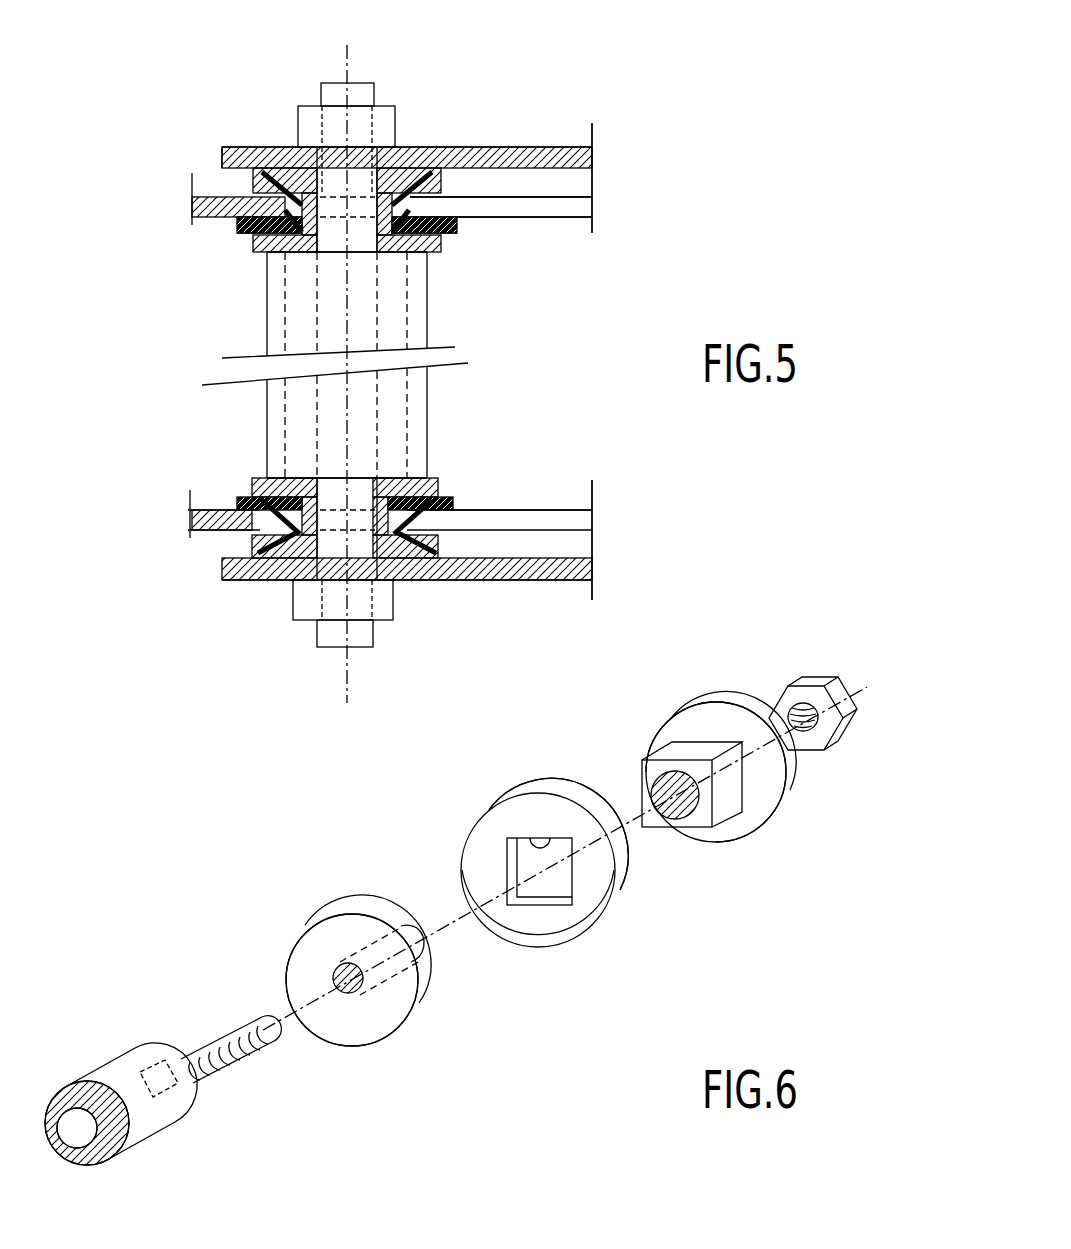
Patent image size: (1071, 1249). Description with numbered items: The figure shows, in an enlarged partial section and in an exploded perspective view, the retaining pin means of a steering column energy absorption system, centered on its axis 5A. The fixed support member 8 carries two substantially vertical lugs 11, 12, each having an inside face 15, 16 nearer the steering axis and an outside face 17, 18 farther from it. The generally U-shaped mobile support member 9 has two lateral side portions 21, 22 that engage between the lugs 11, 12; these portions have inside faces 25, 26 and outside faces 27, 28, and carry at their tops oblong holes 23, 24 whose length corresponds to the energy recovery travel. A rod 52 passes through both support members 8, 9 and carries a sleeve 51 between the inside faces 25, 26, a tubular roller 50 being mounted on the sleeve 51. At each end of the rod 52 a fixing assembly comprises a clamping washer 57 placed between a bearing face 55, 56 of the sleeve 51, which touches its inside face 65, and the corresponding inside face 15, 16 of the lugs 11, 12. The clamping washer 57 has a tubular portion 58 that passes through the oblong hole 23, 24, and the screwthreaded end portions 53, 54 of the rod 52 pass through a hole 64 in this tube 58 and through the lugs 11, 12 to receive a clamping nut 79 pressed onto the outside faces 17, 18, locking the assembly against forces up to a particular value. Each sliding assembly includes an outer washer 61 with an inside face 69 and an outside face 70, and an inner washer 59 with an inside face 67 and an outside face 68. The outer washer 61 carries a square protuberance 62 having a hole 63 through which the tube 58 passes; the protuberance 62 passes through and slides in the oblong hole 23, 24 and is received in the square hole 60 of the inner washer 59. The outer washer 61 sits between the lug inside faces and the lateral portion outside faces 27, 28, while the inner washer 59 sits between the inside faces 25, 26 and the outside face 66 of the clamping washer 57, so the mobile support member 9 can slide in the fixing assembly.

In FIG. 5, the axis 5A is at (347, 62).
In FIG. 6, the axis 5A is at (268, 1022).
In FIG. 5, the fixed support member 8 is at (520, 147).
In FIG. 5, the mobile support member 9 is at (530, 217).
In FIG. 5, the lug 11 is at (232, 150).
In FIG. 5, the lug 12 is at (523, 578).
In FIG. 5, the inside face 15 is at (565, 173).
In FIG. 5, the inside face 16 is at (565, 560).
In FIG. 5, the outside face 17 is at (557, 148).
In FIG. 5, the outside face 18 is at (575, 580).
In FIG. 5, the lateral side portion 21 is at (205, 200).
In FIG. 5, the lateral side portion 22 is at (200, 520).
In FIG. 5, the oblong hole 23 is at (572, 212).
In FIG. 5, the oblong hole 24 is at (517, 520).
In FIG. 5, the inside face 25 is at (505, 218).
In FIG. 5, the inside face 26 is at (578, 505).
In FIG. 5, the outside face 27 is at (565, 195).
In FIG. 5, the outside face 28 is at (565, 528).
In FIG. 5, the tubular roller 50 is at (275, 330).
In FIG. 5, the sleeve 51 is at (405, 397).
In FIG. 6, the sleeve 51 is at (165, 1115).
In FIG. 5, the rod 52 is at (318, 420).
In FIG. 6, the rod 52 is at (85, 1145).
In FIG. 5, the screwthreaded end portion 53 is at (352, 82).
In FIG. 6, the screwthreaded end portion 53 is at (235, 1030).
In FIG. 5, the screwthreaded end portion 54 is at (365, 646).
In FIG. 5, the bearing face 55 is at (407, 252).
In FIG. 6, the bearing face 55 is at (197, 1095).
In FIG. 5, the bearing face 56 is at (410, 475).
In FIG. 5, the clamping washer 57 is at (258, 248).
In FIG. 6, the clamping washer 57 is at (405, 1020).
In FIG. 5, the tubular portion 58 is at (300, 185).
In FIG. 6, the tubular portion 58 is at (415, 935).
In FIG. 5, the inner washer 59 is at (238, 225).
In FIG. 6, the inner washer 59 is at (565, 930).
In FIG. 6, the square hole 60 is at (532, 838).
In FIG. 5, the outer washer 61 is at (268, 172).
In FIG. 6, the outer washer 61 is at (735, 828).
In FIG. 5, the square protuberance 62 is at (400, 175).
In FIG. 6, the square protuberance 62 is at (660, 760).
In FIG. 6, the hole 63 is at (655, 790).
In FIG. 5, the hole 64 is at (362, 205).
In FIG. 6, the hole 64 is at (333, 975).
In FIG. 6, the inside face 65 is at (350, 1046).
In FIG. 6, the outside face 66 is at (335, 915).
In FIG. 6, the inside face 67 is at (522, 925).
In FIG. 6, the outside face 68 is at (616, 880).
In FIG. 6, the inside face 69 is at (768, 790).
In FIG. 6, the outside face 70 is at (715, 707).
In FIG. 5, the clamping nut 79 is at (385, 120).
In FIG. 6, the clamping nut 79 is at (793, 695).